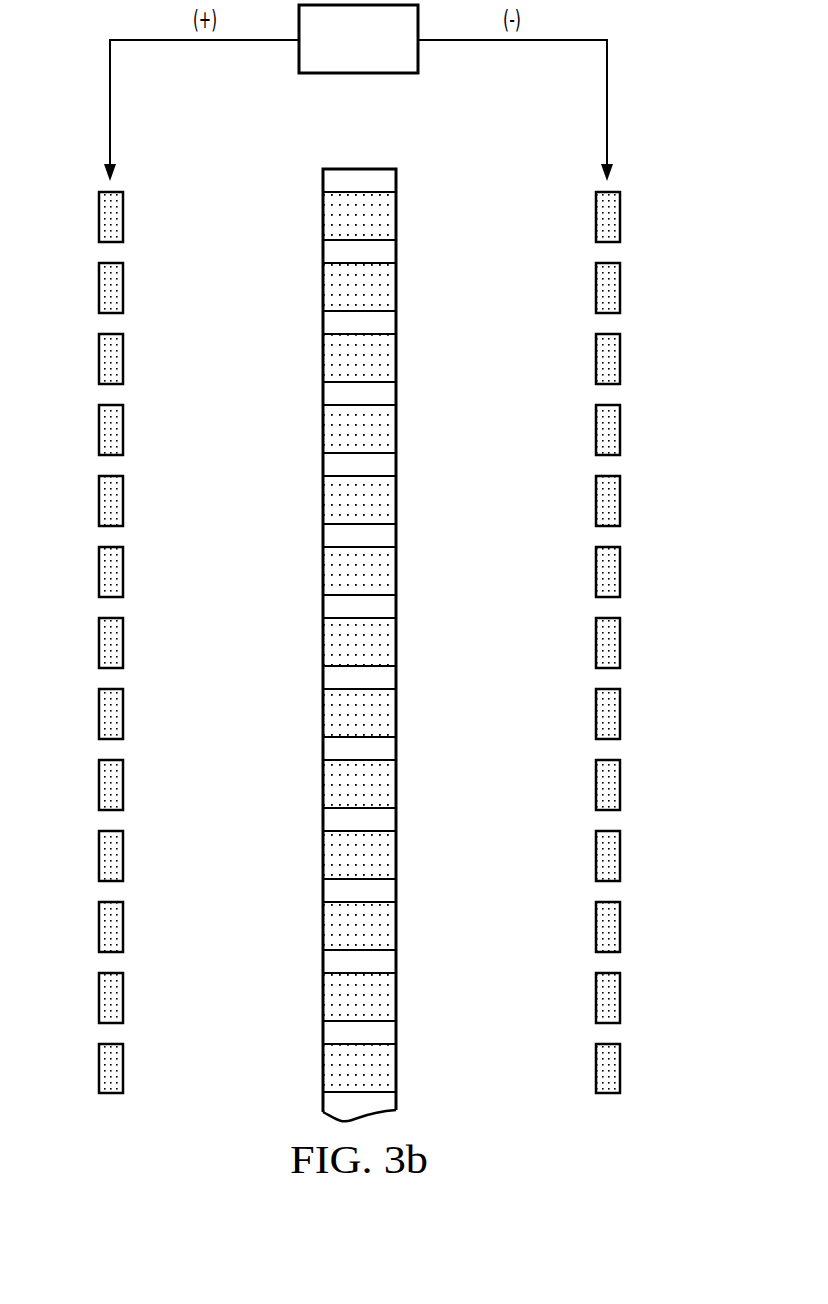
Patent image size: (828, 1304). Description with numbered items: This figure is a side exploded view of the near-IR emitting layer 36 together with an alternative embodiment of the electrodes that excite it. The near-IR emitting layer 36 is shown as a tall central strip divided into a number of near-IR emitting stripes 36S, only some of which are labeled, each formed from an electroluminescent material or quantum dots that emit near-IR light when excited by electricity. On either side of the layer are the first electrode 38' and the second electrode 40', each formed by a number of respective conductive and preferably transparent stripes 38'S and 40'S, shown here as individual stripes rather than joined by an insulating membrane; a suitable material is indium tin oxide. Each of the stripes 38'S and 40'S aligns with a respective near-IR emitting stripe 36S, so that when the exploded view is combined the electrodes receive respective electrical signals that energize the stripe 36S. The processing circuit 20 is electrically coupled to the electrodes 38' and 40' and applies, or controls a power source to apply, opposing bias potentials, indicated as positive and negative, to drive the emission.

The processing circuit 20 is at (375, 56).
The near-IR emitting layer 36 is at (357, 162).
The near-IR emitting stripes 36S is at (385, 285).
The first electrode 38' is at (70, 605).
The conductive transparent stripes of first electrode 38'S is at (70, 642).
The second electrode 40' is at (648, 605).
The conductive transparent stripes of second electrode 40'S is at (648, 642).